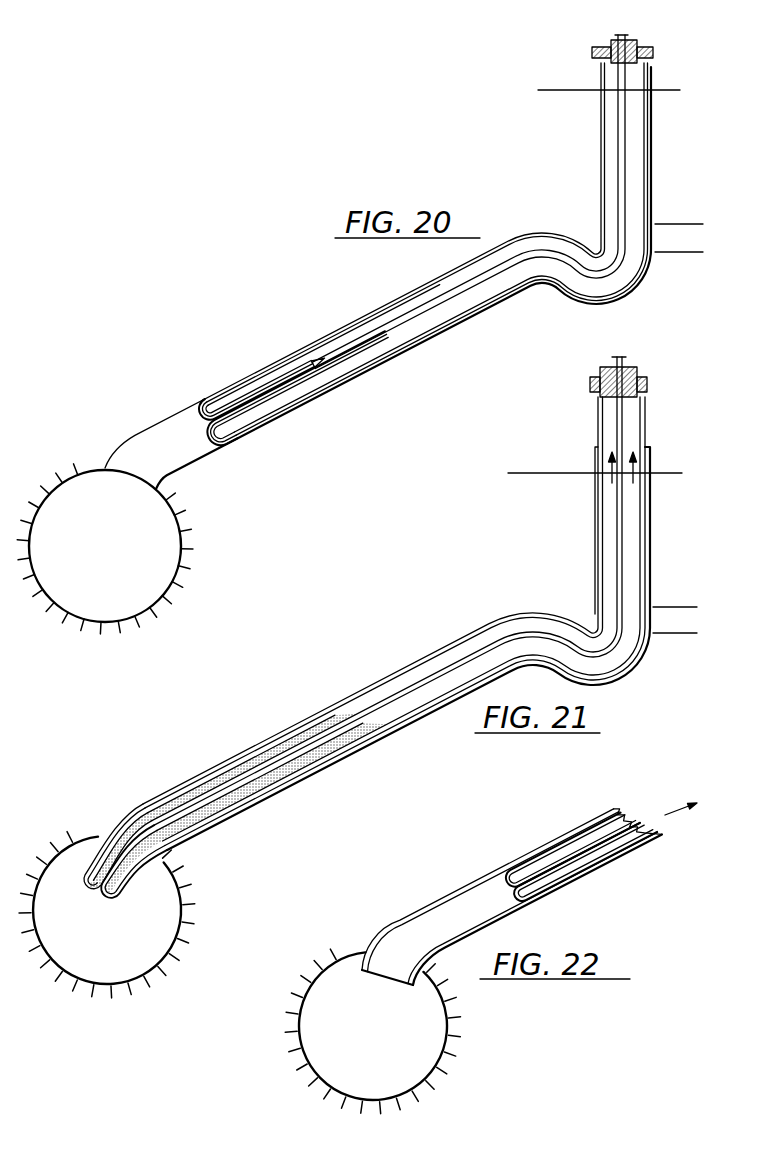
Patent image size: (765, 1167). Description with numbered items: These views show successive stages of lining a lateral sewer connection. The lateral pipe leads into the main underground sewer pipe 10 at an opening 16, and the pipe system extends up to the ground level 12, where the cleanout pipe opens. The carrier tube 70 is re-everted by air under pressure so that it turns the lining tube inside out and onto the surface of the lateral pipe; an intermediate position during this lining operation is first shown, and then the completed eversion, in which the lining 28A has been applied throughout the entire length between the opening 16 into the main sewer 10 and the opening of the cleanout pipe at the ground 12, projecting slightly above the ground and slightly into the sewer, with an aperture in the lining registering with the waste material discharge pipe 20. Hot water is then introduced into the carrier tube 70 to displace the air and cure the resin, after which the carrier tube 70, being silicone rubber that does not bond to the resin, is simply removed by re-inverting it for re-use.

In FIG. 21, the main underground sewer pipe 10 is at (63, 857).
In FIG. 21, the ground level 12 is at (578, 473).
In FIG. 20, the location where the lateral pipe leads into the sewer 16 is at (130, 485).
In FIG. 21, the location where the lateral pipe leads into the sewer 16 is at (152, 860).
In FIG. 21, the waste material pipe 20 is at (674, 607).
In FIG. 21, the lining 28A is at (120, 817).
In FIG. 21, the carrier tube 70 is at (117, 894).
In FIG. 22, the carrier tube 70 is at (504, 877).